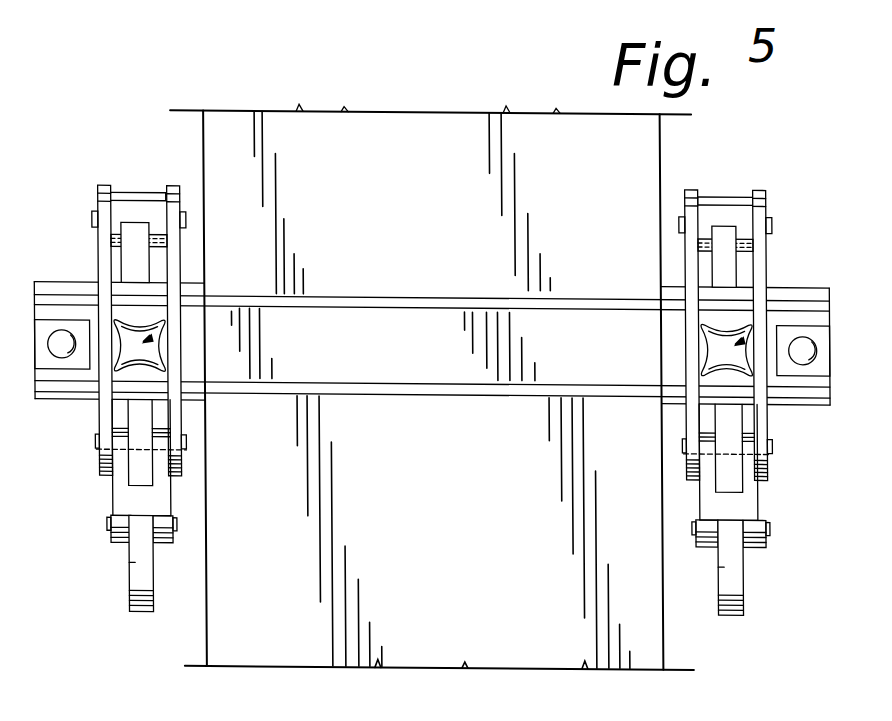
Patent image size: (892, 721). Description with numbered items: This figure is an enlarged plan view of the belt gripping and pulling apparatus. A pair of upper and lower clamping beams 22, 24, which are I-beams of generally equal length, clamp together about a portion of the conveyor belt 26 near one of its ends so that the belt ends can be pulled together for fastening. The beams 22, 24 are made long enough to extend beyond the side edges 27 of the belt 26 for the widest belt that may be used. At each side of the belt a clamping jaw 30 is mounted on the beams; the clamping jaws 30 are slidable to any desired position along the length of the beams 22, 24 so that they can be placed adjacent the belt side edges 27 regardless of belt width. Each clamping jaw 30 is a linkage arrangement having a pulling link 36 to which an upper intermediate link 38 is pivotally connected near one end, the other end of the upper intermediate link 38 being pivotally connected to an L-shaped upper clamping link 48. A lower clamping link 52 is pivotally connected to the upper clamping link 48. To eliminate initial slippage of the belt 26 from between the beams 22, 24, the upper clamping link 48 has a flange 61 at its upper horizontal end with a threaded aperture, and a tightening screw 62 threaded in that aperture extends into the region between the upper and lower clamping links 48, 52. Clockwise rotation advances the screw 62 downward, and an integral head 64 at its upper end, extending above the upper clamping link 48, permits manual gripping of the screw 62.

The upper clamping beam 22 is at (397, 318).
The lower clamping beam 24 is at (790, 292).
The conveyor belt 26 is at (651, 152).
The belt side edge 27 is at (205, 637).
The clamping jaw 30 is at (87, 180).
The pulling link 36 is at (143, 567).
The upper intermediate link 38 is at (124, 497).
The upper clamping link 48 is at (105, 420).
The lower clamping link 52 is at (135, 253).
The flange 61 is at (113, 382).
The tightening screw 62 is at (148, 349).
The head 64 is at (146, 342).